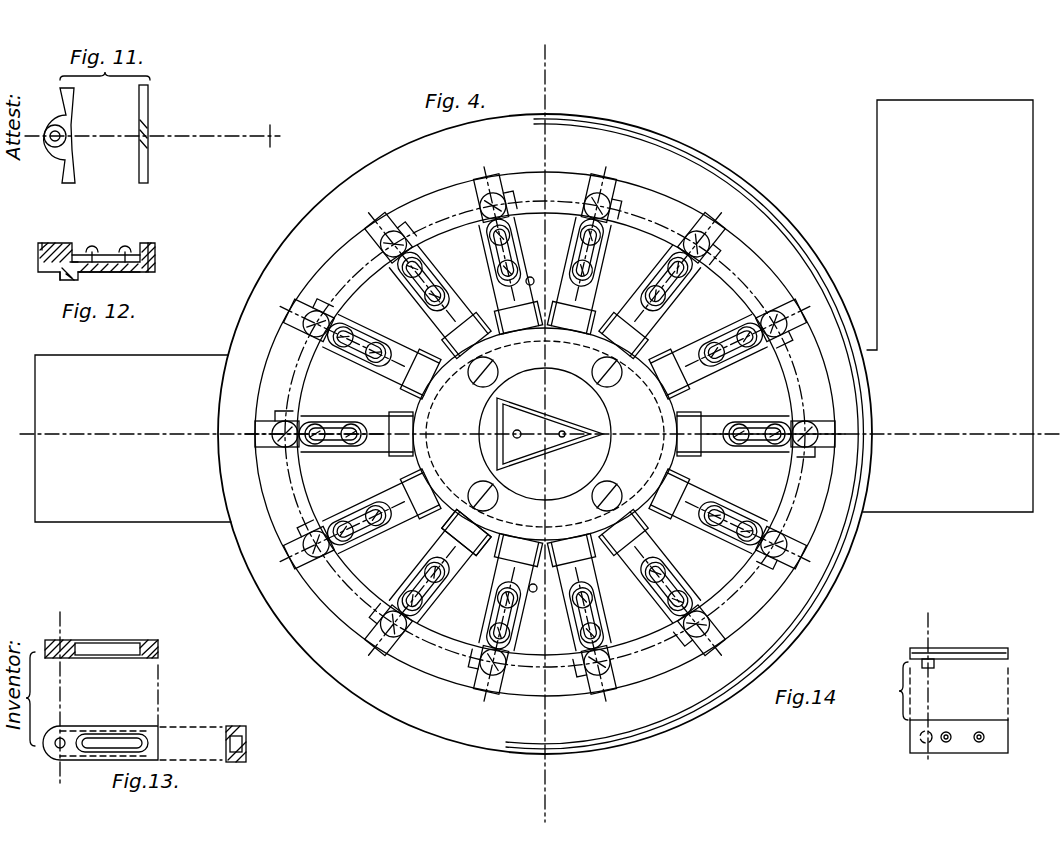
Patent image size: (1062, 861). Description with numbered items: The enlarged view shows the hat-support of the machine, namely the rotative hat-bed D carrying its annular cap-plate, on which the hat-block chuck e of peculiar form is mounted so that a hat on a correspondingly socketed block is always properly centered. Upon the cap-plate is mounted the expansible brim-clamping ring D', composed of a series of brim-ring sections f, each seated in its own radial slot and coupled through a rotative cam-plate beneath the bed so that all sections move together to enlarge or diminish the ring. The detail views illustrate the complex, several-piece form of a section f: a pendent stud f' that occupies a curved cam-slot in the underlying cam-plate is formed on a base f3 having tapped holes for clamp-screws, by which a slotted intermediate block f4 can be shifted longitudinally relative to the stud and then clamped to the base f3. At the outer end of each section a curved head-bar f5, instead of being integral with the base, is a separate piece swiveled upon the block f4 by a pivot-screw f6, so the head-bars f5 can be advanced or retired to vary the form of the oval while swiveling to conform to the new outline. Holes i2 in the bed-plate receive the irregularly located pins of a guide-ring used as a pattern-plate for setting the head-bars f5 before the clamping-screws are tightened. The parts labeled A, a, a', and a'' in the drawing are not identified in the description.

In FIG. 4, the frame standard A is at (534, 311).
In FIG. 4, the rotative hat-bed D is at (545, 434).
In FIG. 4, the expansible brim-clamping ring D' is at (593, 453).
In FIG. 4, the radial arm a is at (545, 443).
In FIG. 4, the arm cross bar a' is at (538, 433).
In FIG. 4, the arm cross bar a'' is at (468, 467).
In FIG. 4, the hat-block chuck e is at (545, 434).
In FIG. 4, the brim-ring section f is at (545, 434).
In FIG. 12, the brim-ring section f is at (96, 257).
In FIG. 12, the pendent stud f' is at (79, 281).
In FIG. 12, the base f3 is at (114, 272).
In FIG. 14, the base f3 is at (916, 649).
In FIG. 4, the slotted intermediate block f4 is at (436, 302).
In FIG. 12, the slotted intermediate block f4 is at (152, 258).
In FIG. 13, the slotted intermediate block f4 is at (60, 645).
In FIG. 4, the curved head-bar f5 is at (302, 356).
In FIG. 11, the curved head-bar f5 is at (98, 136).
In FIG. 12, the curved head-bar f5 is at (44, 246).
In FIG. 4, the pivot-screw f6 is at (305, 325).
In FIG. 12, the pivot-screw f6 is at (56, 274).
In FIG. 4, the holes i2 is at (537, 435).